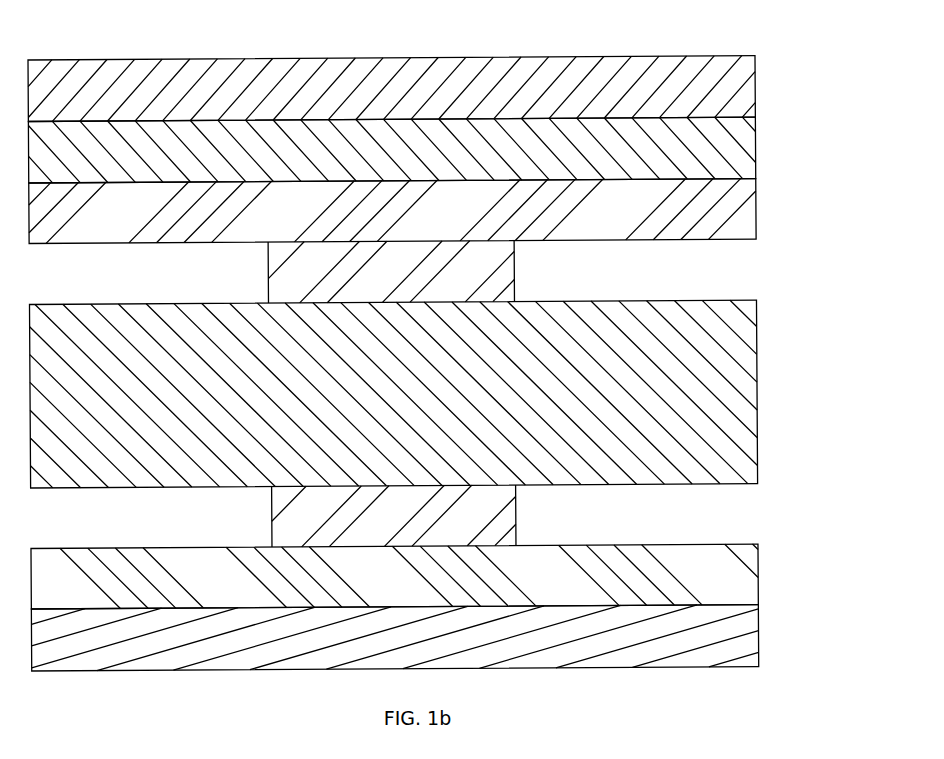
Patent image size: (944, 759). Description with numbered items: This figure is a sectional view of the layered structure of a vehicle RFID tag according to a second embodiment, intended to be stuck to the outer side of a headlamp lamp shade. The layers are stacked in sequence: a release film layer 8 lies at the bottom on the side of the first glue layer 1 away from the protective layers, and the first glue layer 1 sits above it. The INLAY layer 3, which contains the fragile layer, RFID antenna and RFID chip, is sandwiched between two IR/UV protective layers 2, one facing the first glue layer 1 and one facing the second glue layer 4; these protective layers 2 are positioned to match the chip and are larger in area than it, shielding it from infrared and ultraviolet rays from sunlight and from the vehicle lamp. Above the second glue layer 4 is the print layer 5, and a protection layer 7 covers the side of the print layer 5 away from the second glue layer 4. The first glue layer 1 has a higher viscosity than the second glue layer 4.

The first glue layer 1 is at (757, 576).
The IR/UV protective layer 2 is at (514, 272).
The INLAY layer 3 is at (753, 393).
The second glue layer 4 is at (753, 208).
The print layer 5 is at (753, 148).
The protection layer 7 is at (753, 84).
The release film layer 8 is at (757, 633).